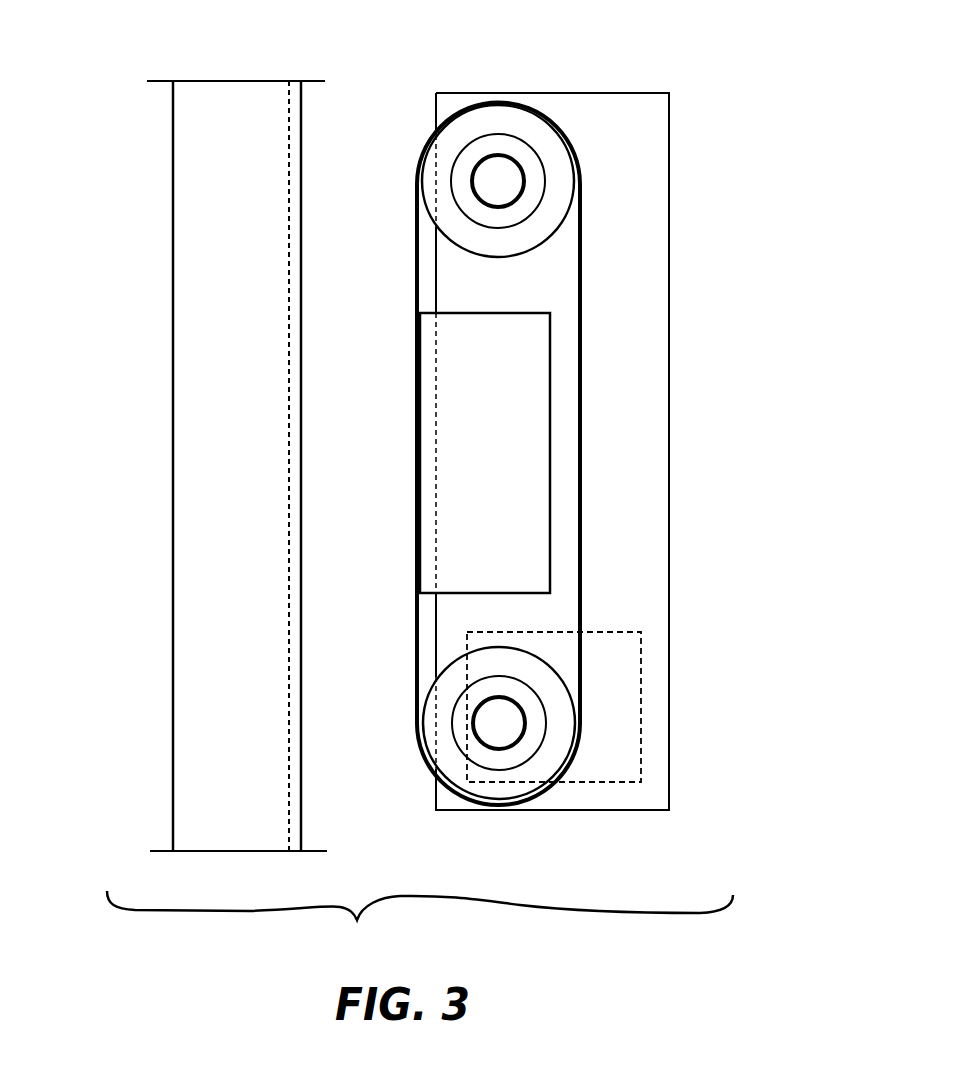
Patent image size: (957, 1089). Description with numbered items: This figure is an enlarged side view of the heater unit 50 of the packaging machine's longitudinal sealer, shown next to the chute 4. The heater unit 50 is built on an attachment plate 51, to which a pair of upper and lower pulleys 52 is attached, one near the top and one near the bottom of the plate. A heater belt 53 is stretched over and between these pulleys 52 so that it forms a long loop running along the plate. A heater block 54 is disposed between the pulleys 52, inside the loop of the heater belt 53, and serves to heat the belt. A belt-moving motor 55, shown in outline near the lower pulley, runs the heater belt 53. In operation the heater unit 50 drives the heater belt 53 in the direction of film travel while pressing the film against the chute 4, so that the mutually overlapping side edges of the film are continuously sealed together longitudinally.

The chute 4 is at (193, 238).
The heater unit 50 is at (543, 448).
The attachment plate 51 is at (643, 280).
The pulley 52 is at (488, 122).
The heater belt 53 is at (582, 492).
The heater block 54 is at (467, 527).
The belt-moving motor 55 is at (618, 670).